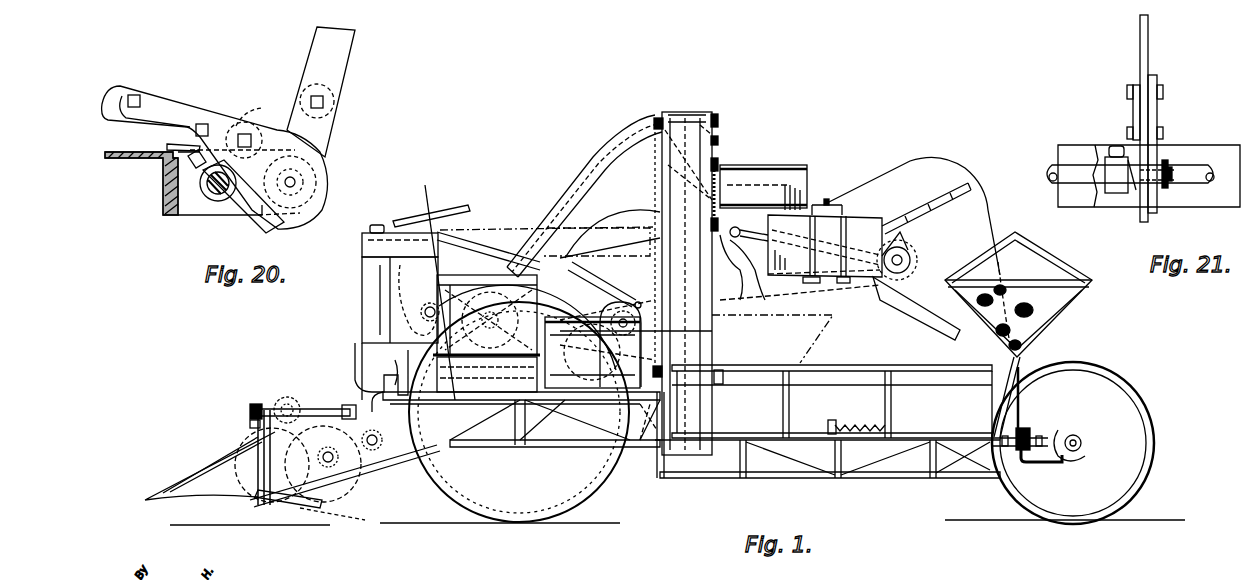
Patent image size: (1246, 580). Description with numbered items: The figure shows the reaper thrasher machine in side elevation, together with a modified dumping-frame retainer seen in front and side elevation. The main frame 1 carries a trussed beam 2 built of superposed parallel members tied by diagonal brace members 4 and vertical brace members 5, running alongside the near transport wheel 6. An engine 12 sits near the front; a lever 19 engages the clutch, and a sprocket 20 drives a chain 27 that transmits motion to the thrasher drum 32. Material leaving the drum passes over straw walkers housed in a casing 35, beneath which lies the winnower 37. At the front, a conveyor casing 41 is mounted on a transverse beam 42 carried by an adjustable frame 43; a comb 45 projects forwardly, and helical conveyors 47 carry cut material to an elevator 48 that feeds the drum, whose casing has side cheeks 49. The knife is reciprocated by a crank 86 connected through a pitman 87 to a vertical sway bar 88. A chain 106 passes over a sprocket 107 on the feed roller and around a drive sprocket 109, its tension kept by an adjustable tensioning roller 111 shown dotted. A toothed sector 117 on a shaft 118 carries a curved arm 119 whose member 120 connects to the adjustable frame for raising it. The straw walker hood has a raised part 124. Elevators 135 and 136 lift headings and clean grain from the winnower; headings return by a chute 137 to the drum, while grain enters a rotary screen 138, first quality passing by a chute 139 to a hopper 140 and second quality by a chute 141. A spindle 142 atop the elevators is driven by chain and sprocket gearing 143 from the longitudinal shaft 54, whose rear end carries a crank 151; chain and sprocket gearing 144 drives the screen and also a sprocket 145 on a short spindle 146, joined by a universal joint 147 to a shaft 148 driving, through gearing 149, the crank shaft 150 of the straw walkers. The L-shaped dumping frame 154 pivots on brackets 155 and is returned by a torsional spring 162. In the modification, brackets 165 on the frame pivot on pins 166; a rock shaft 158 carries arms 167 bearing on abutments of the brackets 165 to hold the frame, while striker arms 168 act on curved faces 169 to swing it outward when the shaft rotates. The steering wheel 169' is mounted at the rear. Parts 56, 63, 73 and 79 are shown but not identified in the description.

In FIG. 1, the main frame 1 is at (540, 448).
In FIG. 20, the trussed beam 2 is at (160, 192).
In FIG. 21, the trussed beam 2 is at (1215, 198).
In FIG. 1, the trussed beam 2 is at (528, 401).
In FIG. 1, the diagonal brace members 4 is at (520, 447).
In FIG. 1, the vertical brace members 5 is at (585, 440).
In FIG. 1, the near transport wheel 6 is at (598, 478).
In FIG. 1, the engine 12 is at (462, 310).
In FIG. 1, the lever 19 is at (603, 285).
In FIG. 1, the sprocket 20 is at (628, 300).
In FIG. 1, the chain 27 is at (690, 331).
In FIG. 1, the thrasher drum 32 is at (560, 228).
In FIG. 1, the casing 35 is at (959, 297).
In FIG. 1, the winnower 37 is at (830, 320).
In FIG. 1, the conveyor casing 41 is at (345, 468).
In FIG. 1, the transverse beam 42 is at (300, 505).
In FIG. 1, the adjustable frame 43 is at (395, 482).
In FIG. 1, the comb 45 is at (180, 495).
In FIG. 1, the helical conveyors 47 is at (335, 510).
In FIG. 1, the elevator 48 is at (357, 375).
In FIG. 1, the side cheeks 49 is at (364, 287).
In FIG. 1, the longitudinal shaft 54 is at (646, 422).
In FIG. 1, the chain 56 is at (800, 283).
In FIG. 1, the post 63 is at (258, 500).
In FIG. 1, the shaft 73 is at (305, 407).
In FIG. 1, the bearing 79 is at (282, 398).
In FIG. 1, the crank 86 is at (250, 423).
In FIG. 1, the pitman 87 is at (250, 408).
In FIG. 1, the sway bar 88 is at (245, 442).
In FIG. 1, the chain 106 is at (548, 335).
In FIG. 1, the sprocket 107 is at (426, 306).
In FIG. 1, the drive sprocket 109 is at (382, 321).
In FIG. 1, the adjustable tensioning roller 111 is at (450, 232).
In FIG. 1, the toothed sector 117 is at (505, 420).
In FIG. 1, the shaft 118 is at (376, 404).
In FIG. 1, the curved arm 119 is at (515, 408).
In FIG. 1, the connecting member 120 is at (384, 440).
In FIG. 1, the raised part 124 is at (620, 218).
In FIG. 1, the elevator 135 is at (714, 145).
In FIG. 1, the elevator 136 is at (663, 165).
In FIG. 1, the chute 137 is at (590, 160).
In FIG. 1, the rotary screen 138 is at (760, 180).
In FIG. 1, the chute 139 is at (815, 203).
In FIG. 1, the hopper 140 is at (825, 249).
In FIG. 1, the chute 141 is at (895, 298).
In FIG. 1, the spindle 142 is at (720, 138).
In FIG. 1, the chain and sprocket gearing 143 is at (655, 120).
In FIG. 1, the chain and sprocket gearing 144 is at (718, 116).
In FIG. 1, the sprocket 145 is at (722, 245).
In FIG. 1, the short spindle 146 is at (751, 274).
In FIG. 1, the universal joint 147 is at (740, 237).
In FIG. 1, the shaft 148 is at (795, 188).
In FIG. 1, the gearing 149 is at (905, 252).
In FIG. 1, the crank shaft 150 is at (905, 260).
In FIG. 1, the crank 151 is at (724, 378).
In FIG. 20, the L-shaped dumping frame 154 is at (340, 62).
In FIG. 21, the L-shaped dumping frame 154 is at (1140, 47).
In FIG. 20, the brackets 155 is at (205, 205).
In FIG. 21, the brackets 155 is at (1152, 205).
In FIG. 20, the rock shaft 158 is at (219, 200).
In FIG. 21, the rock shaft 158 is at (1066, 172).
In FIG. 1, the torsional spring 162 is at (868, 421).
In FIG. 20, the brackets 165 is at (312, 165).
In FIG. 21, the brackets 165 is at (1160, 112).
In FIG. 20, the pins 166 is at (298, 186).
In FIG. 21, the pins 166 is at (1172, 170).
In FIG. 20, the arms 167 is at (282, 215).
In FIG. 21, the arms 167 is at (1122, 212).
In FIG. 20, the striker arms 168 is at (168, 146).
In FIG. 20, the curved faces 169 is at (215, 157).
In FIG. 1, the steering wheel 169' is at (1087, 443).